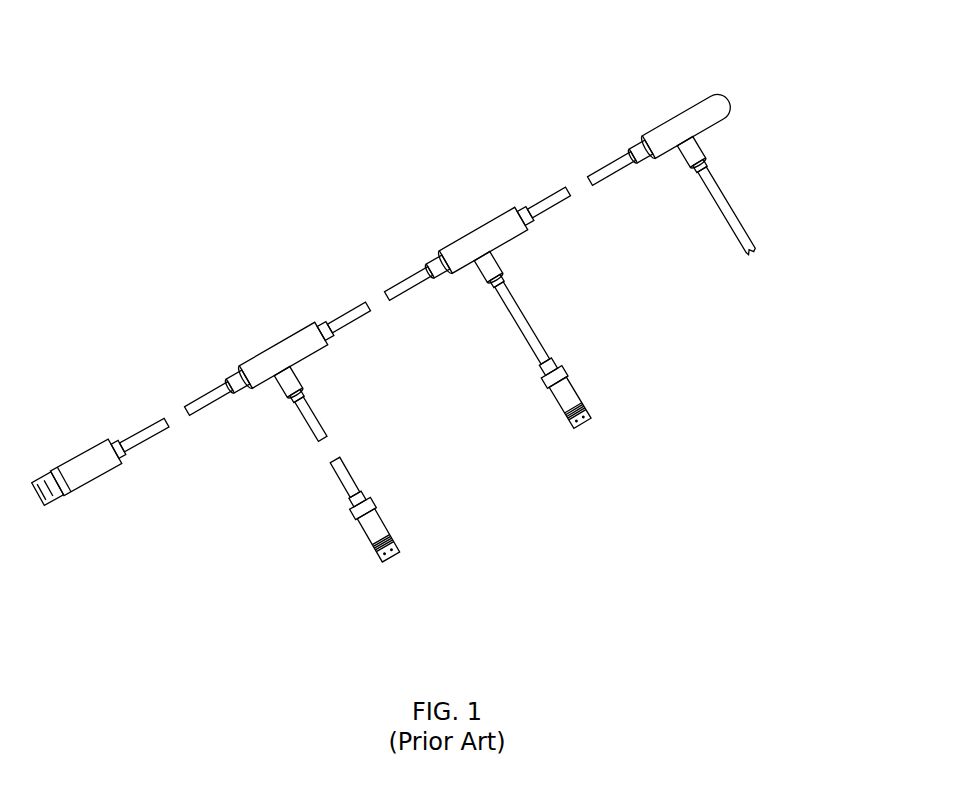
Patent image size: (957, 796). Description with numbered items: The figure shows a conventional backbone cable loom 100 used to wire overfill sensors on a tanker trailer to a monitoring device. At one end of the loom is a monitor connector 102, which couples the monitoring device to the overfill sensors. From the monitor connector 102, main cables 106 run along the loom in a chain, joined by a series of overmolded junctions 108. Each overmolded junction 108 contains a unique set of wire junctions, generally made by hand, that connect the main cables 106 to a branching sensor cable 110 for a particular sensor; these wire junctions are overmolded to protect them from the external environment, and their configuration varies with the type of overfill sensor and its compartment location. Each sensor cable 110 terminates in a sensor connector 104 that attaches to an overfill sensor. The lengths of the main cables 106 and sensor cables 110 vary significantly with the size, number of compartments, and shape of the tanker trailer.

The backbone cable loom 100 is at (843, 68).
The monitor connector 102 is at (108, 485).
The sensor connector 104 is at (617, 415).
The main cable 106 is at (195, 413).
The overmolded junction 108 is at (690, 97).
The sensor cable 110 is at (320, 425).